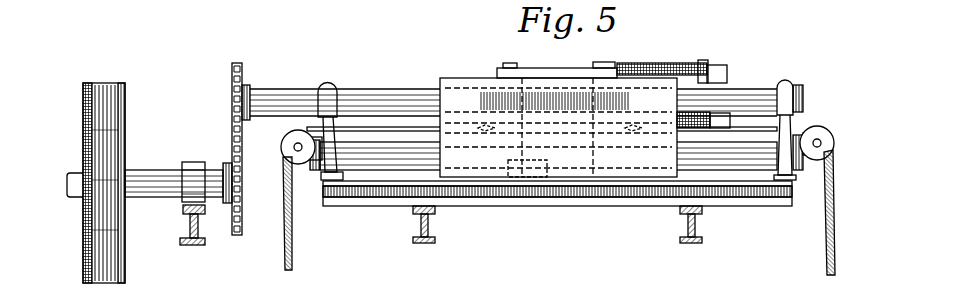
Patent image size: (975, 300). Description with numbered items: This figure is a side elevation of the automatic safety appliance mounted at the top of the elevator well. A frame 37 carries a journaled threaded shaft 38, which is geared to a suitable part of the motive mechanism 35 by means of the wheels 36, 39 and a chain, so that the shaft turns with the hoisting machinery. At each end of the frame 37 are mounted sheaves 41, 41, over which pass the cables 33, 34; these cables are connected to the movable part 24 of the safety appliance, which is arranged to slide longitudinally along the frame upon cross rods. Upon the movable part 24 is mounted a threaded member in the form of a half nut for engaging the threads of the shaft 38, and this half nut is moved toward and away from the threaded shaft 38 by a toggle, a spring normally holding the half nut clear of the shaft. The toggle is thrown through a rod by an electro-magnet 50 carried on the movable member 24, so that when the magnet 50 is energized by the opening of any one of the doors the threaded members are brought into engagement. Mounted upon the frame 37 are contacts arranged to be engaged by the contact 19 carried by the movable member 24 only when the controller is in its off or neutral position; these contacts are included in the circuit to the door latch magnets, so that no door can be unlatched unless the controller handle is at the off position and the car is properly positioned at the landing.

The contact 19 is at (528, 172).
The movable part 24 is at (463, 95).
The cable 33 is at (738, 128).
The cable 34 is at (363, 130).
The motive mechanism 35 is at (117, 108).
The wheel 36 is at (242, 66).
The frame 37 is at (598, 195).
The threaded shaft 38 is at (288, 98).
The wheel 39 is at (237, 237).
The sheave 41 is at (288, 150).
The electro-magnet 50 is at (667, 67).